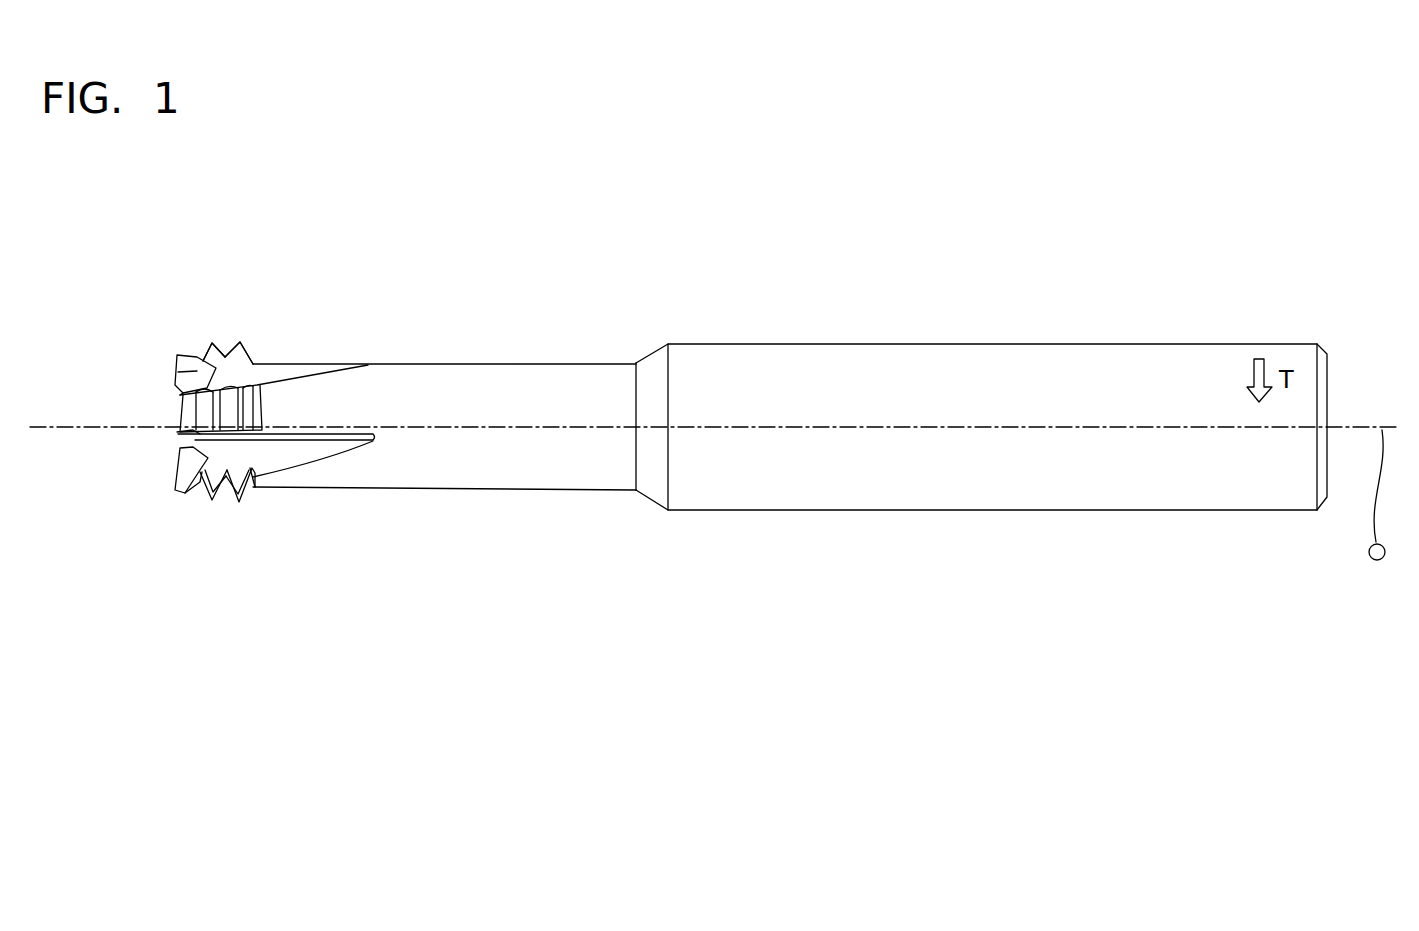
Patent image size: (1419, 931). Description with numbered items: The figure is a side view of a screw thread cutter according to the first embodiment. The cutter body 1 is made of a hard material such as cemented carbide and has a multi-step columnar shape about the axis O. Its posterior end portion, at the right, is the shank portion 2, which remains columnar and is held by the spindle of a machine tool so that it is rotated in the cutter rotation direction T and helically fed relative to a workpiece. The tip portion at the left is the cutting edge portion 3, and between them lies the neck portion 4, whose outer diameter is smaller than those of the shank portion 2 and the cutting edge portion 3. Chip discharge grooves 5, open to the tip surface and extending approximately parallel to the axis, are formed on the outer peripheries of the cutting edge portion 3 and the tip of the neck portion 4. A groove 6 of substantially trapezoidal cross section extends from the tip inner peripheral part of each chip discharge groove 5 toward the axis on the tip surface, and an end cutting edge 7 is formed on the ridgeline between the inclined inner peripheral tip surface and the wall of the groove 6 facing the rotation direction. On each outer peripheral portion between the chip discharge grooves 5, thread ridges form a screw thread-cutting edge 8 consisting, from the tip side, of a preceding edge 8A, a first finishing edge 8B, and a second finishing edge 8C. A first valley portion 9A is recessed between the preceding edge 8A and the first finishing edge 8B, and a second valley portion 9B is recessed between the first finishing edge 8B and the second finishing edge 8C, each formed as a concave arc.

The cutter body 1 is at (718, 148).
The shank portion 2 is at (756, 280).
The cutting edge portion 3 is at (262, 306).
The neck portion 4 is at (562, 306).
The chip discharge groove 5 is at (286, 366).
The groove 6 is at (193, 373).
The end cutting edge 7 is at (178, 383).
The screw thread-cutting edge 8 is at (212, 255).
The preceding edge 8A is at (188, 352).
The first finishing edge 8B is at (212, 345).
The second finishing edge 8C is at (242, 347).
The first valley portion 9A is at (197, 490).
The second valley portion 9B is at (223, 493).